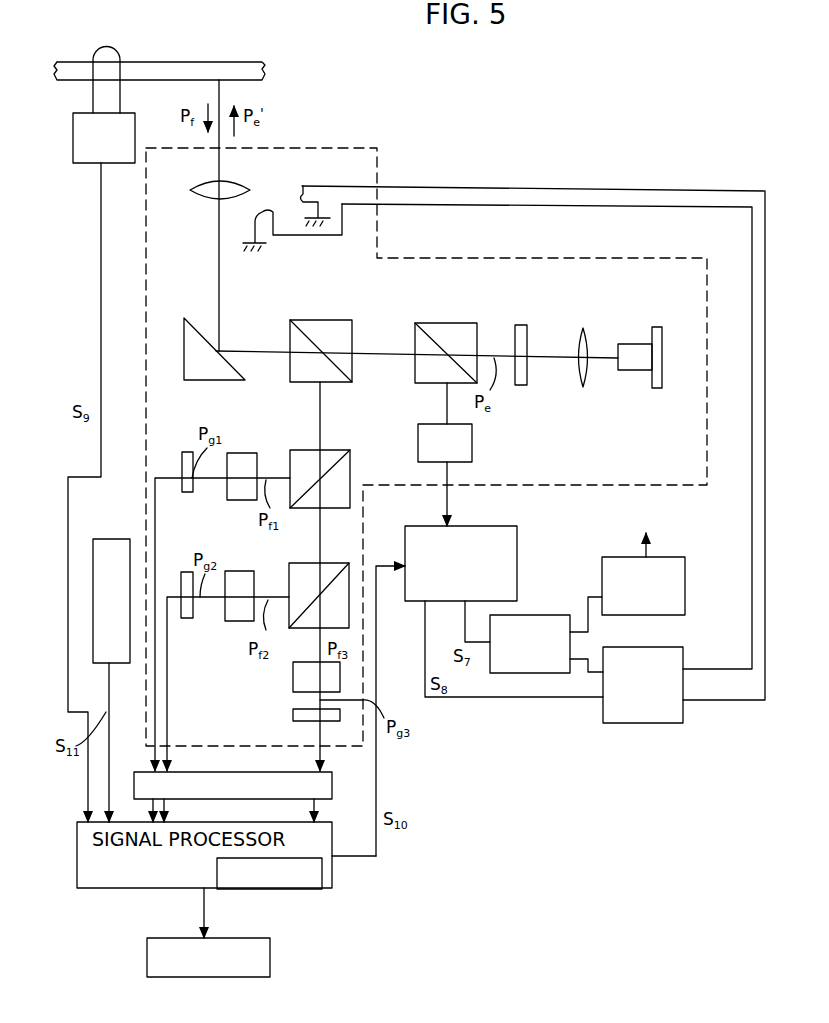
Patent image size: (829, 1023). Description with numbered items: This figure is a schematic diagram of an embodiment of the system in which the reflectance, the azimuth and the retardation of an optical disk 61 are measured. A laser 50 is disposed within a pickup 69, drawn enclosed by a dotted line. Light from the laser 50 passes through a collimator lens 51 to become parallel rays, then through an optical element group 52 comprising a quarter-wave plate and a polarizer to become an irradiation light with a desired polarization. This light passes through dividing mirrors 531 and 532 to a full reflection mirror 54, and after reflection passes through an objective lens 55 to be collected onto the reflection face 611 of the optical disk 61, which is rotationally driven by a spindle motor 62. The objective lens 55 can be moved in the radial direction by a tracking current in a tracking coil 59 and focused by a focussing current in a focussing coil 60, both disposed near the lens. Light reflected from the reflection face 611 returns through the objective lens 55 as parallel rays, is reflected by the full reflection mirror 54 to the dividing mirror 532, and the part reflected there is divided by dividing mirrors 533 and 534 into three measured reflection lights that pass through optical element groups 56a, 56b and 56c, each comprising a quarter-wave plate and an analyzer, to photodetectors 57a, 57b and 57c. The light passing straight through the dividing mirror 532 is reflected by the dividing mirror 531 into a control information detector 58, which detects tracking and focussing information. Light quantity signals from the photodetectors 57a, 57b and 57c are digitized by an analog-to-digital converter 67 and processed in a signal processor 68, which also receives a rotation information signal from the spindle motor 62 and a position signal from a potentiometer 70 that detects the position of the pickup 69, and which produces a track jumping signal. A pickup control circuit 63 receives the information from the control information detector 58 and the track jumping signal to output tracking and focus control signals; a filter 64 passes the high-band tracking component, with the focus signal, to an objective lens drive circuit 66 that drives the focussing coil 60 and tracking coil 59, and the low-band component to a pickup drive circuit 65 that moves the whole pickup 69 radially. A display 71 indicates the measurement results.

The laser 50 is at (635, 370).
The collimator lens 51 is at (580, 386).
The optical element group 52 is at (520, 386).
The dividing mirror 531 is at (447, 322).
The dividing mirror 532 is at (318, 318).
The dividing mirror 533 is at (334, 456).
The dividing mirror 534 is at (331, 562).
The full reflection mirror 54 is at (197, 380).
The objective lens 55 is at (205, 196).
The optical element group 56a is at (243, 455).
The optical element group 56b is at (243, 572).
The optical element group 56c is at (293, 682).
The photodetector 57a is at (187, 493).
The photodetector 57b is at (187, 619).
The photodetector 57c is at (293, 715).
The control information detector 58 is at (472, 452).
The tracking coil 59 is at (270, 212).
The focussing coil 60 is at (304, 186).
The optical disk 61 is at (143, 68).
The reflection face 611 is at (266, 87).
The spindle motor 62 is at (86, 160).
The pickup control circuit 63 is at (506, 541).
The filter 64 is at (525, 617).
The pickup drive circuit 65 is at (685, 587).
The objective lens drive circuit 66 is at (661, 725).
The analog-to-digital converter 67 is at (330, 786).
The signal processor 68 is at (325, 872).
The pickup 69 is at (378, 150).
The potentiometer 70 is at (100, 590).
The display 71 is at (270, 957).